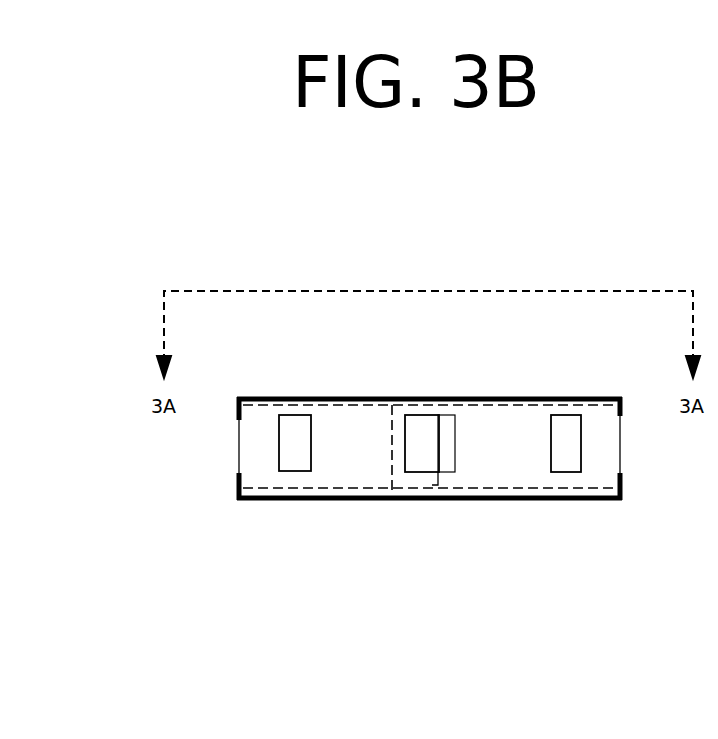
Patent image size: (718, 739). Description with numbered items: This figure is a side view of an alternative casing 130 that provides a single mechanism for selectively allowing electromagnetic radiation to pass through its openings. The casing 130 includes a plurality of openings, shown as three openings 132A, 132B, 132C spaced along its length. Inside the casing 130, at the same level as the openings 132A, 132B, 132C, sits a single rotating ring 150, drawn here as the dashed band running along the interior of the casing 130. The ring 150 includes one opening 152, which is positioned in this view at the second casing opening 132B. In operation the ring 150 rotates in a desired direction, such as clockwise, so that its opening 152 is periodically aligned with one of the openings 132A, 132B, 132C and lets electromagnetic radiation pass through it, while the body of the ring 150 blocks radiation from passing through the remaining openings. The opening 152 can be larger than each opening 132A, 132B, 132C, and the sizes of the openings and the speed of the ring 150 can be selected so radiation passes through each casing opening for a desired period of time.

The casing 130 is at (525, 502).
The rotating ring 150 is at (330, 488).
The opening 152 is at (422, 488).
The opening 132A is at (295, 415).
The opening 132B is at (422, 415).
The opening 132C is at (570, 415).